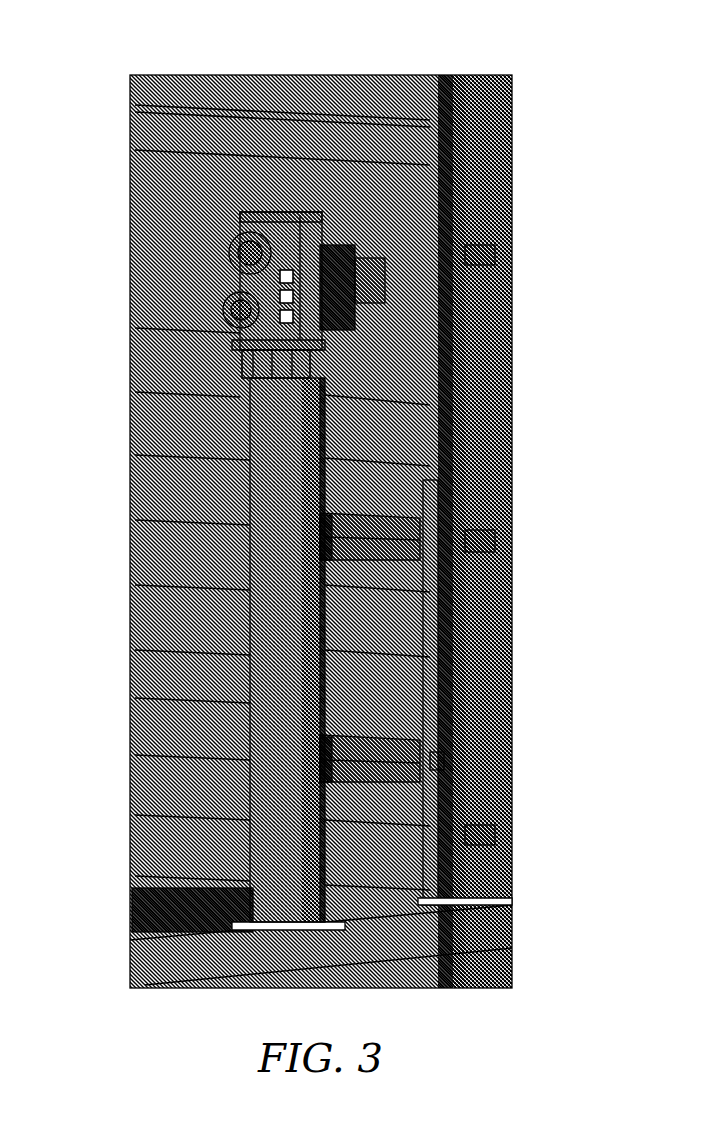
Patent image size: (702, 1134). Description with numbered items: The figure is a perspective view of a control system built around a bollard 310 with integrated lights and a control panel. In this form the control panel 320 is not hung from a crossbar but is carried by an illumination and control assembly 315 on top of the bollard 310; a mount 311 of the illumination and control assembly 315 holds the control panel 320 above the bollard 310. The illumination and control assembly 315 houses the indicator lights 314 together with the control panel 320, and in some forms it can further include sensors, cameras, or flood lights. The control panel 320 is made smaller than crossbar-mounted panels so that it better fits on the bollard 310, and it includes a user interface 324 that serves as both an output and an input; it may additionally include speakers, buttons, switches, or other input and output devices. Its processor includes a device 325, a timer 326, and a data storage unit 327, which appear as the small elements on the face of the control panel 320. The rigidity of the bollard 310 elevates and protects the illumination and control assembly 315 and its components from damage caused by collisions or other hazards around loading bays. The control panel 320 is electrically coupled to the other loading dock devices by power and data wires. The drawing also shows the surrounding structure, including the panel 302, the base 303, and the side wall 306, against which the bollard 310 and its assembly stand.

The rack panel 302 is at (155, 503).
The base 303 is at (158, 907).
The side wall 306 is at (503, 327).
The bollard 310 is at (285, 733).
The mount 311 is at (220, 377).
The indicator lights 314 is at (240, 323).
The illumination and control assembly 315 is at (285, 222).
The control panel 320 is at (340, 242).
The user interface 324 is at (353, 290).
The device 325 is at (293, 277).
The timer 326 is at (293, 297).
The data storage unit 327 is at (293, 318).